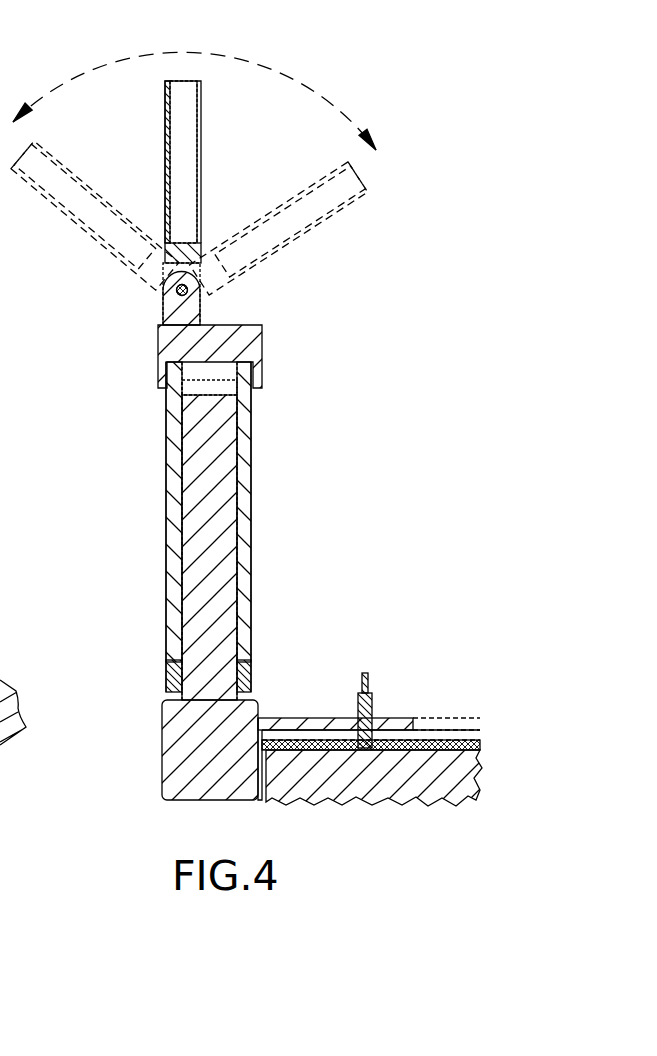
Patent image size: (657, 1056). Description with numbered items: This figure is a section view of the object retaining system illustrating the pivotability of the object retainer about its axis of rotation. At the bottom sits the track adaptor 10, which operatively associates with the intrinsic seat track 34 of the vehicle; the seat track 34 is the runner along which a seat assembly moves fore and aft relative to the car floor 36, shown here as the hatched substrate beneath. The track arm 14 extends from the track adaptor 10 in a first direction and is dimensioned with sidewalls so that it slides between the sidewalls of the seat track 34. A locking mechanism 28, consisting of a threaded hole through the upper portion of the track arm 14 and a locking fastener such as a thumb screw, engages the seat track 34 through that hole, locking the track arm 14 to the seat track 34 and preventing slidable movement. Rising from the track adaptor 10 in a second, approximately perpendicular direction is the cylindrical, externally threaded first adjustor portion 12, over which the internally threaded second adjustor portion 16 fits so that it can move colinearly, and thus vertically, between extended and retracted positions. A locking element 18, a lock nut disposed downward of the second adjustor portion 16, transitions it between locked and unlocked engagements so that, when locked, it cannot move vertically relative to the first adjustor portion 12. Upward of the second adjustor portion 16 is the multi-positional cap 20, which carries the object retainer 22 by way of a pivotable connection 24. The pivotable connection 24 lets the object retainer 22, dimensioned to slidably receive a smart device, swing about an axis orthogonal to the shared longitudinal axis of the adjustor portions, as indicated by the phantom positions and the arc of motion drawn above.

The track adaptor 10 is at (170, 770).
The first adjustor portion 12 is at (240, 590).
The track arm 14 is at (290, 722).
The second adjustor portion 16 is at (251, 462).
The locking element 18 is at (251, 672).
The multi-positional cap 20 is at (256, 338).
The object retainer 22 is at (165, 130).
The pivotable connection 24 is at (187, 291).
The locking mechanism 28 is at (372, 696).
The seat track 34 is at (428, 740).
The car floor 36 is at (300, 792).